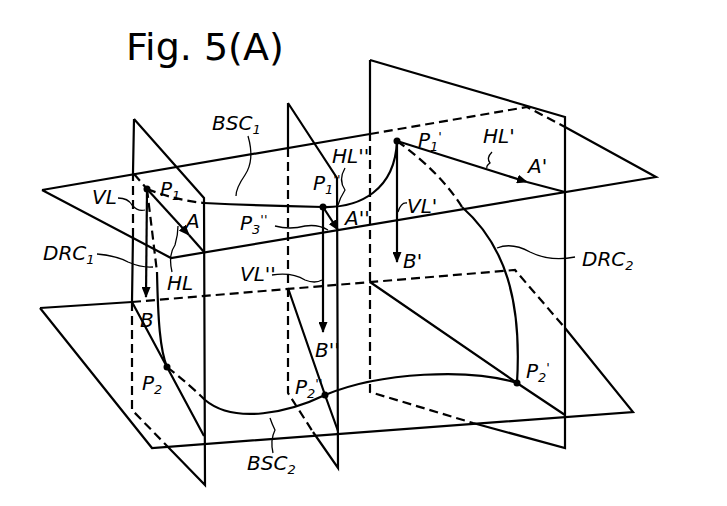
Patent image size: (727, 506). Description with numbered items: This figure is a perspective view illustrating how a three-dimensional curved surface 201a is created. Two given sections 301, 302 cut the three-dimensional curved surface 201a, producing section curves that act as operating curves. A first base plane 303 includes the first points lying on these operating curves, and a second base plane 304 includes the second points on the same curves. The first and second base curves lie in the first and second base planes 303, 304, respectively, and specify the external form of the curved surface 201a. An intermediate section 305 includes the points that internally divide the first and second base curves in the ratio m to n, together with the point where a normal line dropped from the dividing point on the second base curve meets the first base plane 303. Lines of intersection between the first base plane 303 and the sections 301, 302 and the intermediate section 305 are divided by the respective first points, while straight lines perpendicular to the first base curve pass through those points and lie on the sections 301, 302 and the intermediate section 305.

The given section 301 is at (147, 140).
The given section 302 is at (422, 88).
The first base plane 303 is at (604, 163).
The second base plane 304 is at (598, 384).
The intermediate section 305 is at (302, 127).
The three-dimensional curved surface 201a is at (417, 360).